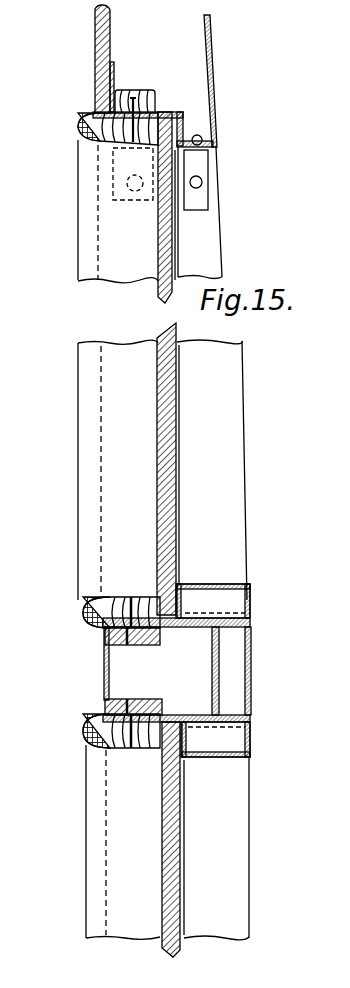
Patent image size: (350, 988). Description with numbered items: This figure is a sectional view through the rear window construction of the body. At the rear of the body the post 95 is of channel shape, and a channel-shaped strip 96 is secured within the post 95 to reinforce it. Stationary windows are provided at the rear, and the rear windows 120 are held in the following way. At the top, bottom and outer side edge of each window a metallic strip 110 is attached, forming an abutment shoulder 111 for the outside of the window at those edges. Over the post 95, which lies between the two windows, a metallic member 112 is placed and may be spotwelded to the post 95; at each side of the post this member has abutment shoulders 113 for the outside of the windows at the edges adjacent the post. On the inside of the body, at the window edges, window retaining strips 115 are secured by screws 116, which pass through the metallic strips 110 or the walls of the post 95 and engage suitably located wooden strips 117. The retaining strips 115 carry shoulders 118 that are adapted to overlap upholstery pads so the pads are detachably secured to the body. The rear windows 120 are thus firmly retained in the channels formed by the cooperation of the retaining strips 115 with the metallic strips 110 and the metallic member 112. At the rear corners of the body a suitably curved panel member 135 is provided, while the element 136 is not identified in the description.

The post 95 is at (105, 661).
The channel-shaped strip 96 is at (219, 682).
The metallic strip 110 is at (160, 112).
The abutment shoulder 111 is at (185, 117).
The metallic member 112 is at (251, 657).
The abutment shoulder 113 is at (185, 605).
The window retaining strip 115 is at (85, 225).
The screw 116 is at (78, 127).
The wooden strip 117 is at (145, 93).
The shoulder 118 is at (100, 118).
The rear window 120 is at (180, 243).
The curved panel member 135 is at (211, 45).
The screw 136 is at (204, 141).